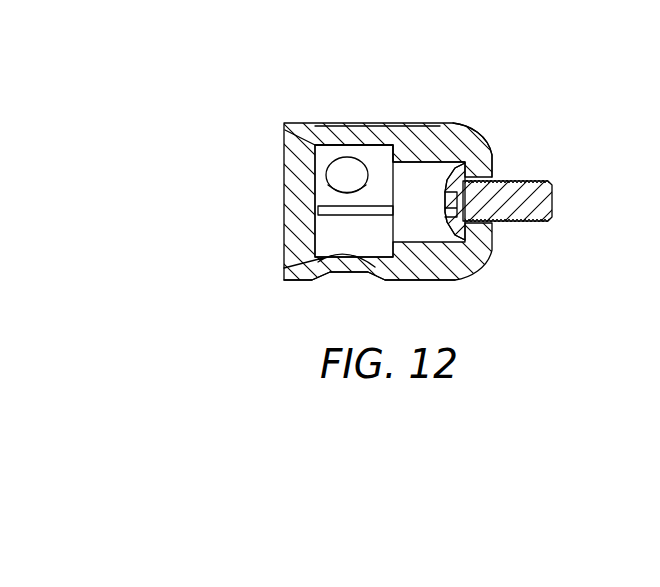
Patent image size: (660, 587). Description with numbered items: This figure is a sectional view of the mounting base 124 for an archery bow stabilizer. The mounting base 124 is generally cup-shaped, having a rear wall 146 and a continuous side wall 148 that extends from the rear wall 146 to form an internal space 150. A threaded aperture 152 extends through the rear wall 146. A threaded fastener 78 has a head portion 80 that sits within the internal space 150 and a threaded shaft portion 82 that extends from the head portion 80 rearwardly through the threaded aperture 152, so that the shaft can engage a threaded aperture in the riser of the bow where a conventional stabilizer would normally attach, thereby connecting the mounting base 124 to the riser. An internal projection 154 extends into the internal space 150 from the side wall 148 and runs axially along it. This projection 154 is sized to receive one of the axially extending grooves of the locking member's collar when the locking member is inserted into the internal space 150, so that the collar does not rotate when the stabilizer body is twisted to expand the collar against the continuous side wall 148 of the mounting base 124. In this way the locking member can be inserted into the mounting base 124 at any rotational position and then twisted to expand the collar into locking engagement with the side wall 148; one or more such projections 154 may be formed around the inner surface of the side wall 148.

The mounting base 124 is at (308, 123).
The continuous side wall 148 is at (423, 137).
The rear wall 146 is at (493, 152).
The threaded fastener 78 is at (555, 197).
The threaded shaft portion 82 is at (539, 222).
The threaded aperture 152 is at (447, 232).
The head portion 80 is at (455, 280).
The internal space 150 is at (338, 235).
The internal projection 154 is at (323, 208).